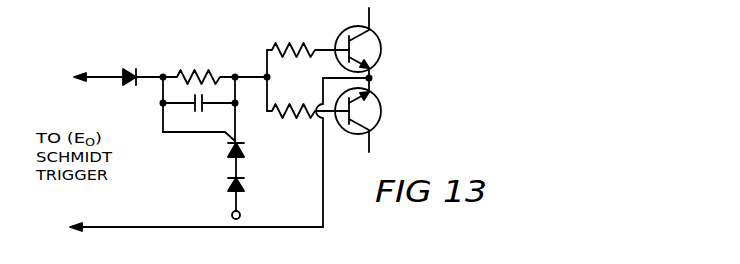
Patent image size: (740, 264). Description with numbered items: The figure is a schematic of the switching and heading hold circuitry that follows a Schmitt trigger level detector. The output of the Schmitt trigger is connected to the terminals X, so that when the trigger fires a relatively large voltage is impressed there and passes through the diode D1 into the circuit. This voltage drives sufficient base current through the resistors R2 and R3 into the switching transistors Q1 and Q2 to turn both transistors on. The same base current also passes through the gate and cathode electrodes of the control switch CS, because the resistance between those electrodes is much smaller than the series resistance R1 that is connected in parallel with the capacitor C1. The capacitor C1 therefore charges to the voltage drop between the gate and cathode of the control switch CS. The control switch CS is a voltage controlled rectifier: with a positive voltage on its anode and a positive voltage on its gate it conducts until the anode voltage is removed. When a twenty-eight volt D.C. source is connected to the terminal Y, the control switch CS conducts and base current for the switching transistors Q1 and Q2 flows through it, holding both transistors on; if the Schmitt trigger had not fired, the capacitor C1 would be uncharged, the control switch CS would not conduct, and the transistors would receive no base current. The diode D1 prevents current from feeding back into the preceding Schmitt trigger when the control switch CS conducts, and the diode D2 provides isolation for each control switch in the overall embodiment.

The terminals xx X is at (196, 144).
The terminal y Y is at (240, 217).
The diode D1 is at (142, 68).
The series resistance R1 is at (199, 65).
The capacitor C1 is at (199, 110).
The control switch CS is at (213, 155).
The diode D2 is at (246, 194).
The resistor R2 is at (308, 39).
The resistor R3 is at (308, 100).
The switching transistor Q1 is at (369, 43).
The switching transistor Q2 is at (369, 115).